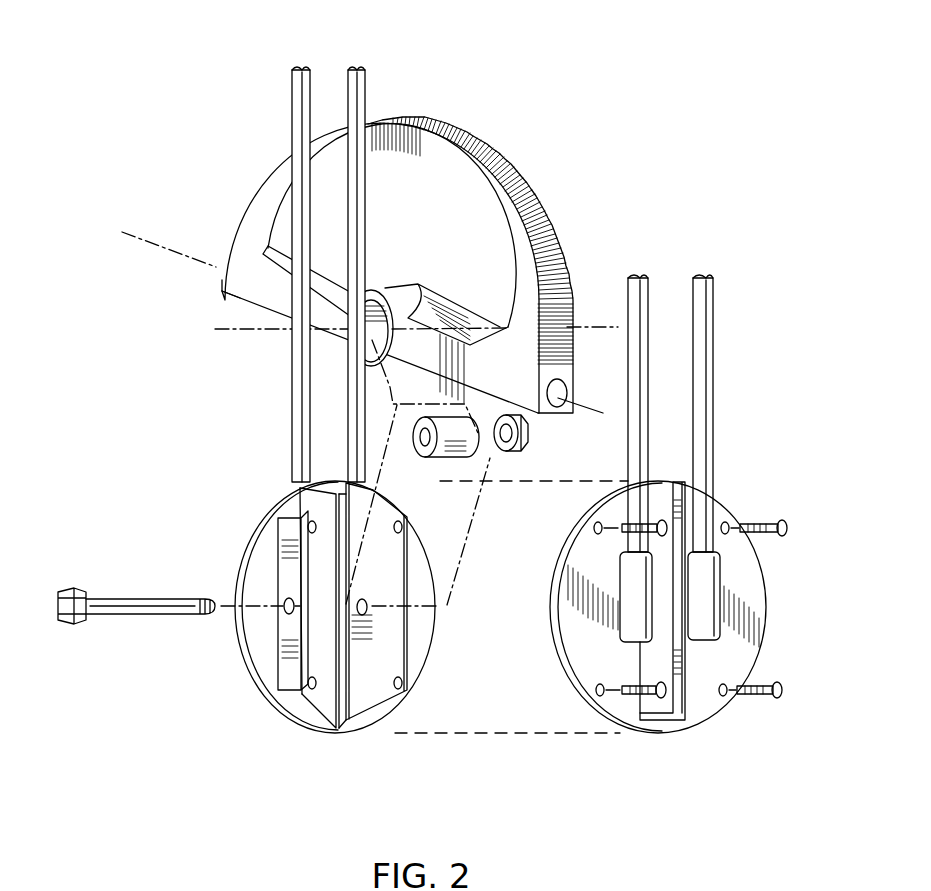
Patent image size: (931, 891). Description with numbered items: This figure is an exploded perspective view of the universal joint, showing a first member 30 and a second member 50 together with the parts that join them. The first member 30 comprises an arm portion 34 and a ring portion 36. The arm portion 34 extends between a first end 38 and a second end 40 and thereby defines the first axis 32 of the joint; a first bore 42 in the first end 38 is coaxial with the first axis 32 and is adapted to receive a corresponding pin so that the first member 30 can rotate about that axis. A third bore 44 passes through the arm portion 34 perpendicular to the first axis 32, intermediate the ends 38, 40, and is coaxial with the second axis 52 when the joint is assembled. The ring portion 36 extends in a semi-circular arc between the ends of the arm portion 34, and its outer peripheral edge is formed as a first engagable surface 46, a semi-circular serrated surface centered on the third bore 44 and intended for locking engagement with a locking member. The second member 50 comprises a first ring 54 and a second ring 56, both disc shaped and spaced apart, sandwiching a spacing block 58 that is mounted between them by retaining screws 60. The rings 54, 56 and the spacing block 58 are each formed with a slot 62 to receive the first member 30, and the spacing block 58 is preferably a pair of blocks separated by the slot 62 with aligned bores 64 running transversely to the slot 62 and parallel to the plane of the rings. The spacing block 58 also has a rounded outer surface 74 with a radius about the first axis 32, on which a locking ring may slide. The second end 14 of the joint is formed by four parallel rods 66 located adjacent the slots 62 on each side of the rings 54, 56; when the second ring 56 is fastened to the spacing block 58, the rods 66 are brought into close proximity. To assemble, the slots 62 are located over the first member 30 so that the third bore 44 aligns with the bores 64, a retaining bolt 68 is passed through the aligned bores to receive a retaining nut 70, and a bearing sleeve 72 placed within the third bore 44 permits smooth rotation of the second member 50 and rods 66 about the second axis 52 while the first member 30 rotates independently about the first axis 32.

The second end 14 is at (491, 277).
The first member 30 is at (391, 282).
The first axis 32 is at (130, 232).
The arm portion 34 is at (455, 330).
The ring portion 36 is at (530, 197).
The first end 38 is at (581, 398).
The second end 40 is at (227, 298).
The first bore 42 is at (558, 398).
The third bore 44 is at (353, 343).
The first engagable surface 46 is at (493, 158).
The second member 50 is at (703, 608).
The second axis 52 is at (220, 330).
The first ring 54 is at (247, 667).
The second ring 56 is at (712, 724).
The spacing block 58 is at (390, 657).
The retaining screws 60 is at (657, 522).
The slot 62 is at (345, 492).
The bores 64 is at (283, 600).
The rods 66 is at (290, 82).
The retaining bolt 68 is at (134, 614).
The retaining nut 70 is at (518, 452).
The bearing sleeve 72 is at (452, 442).
The rounded outer surface 74 is at (298, 503).